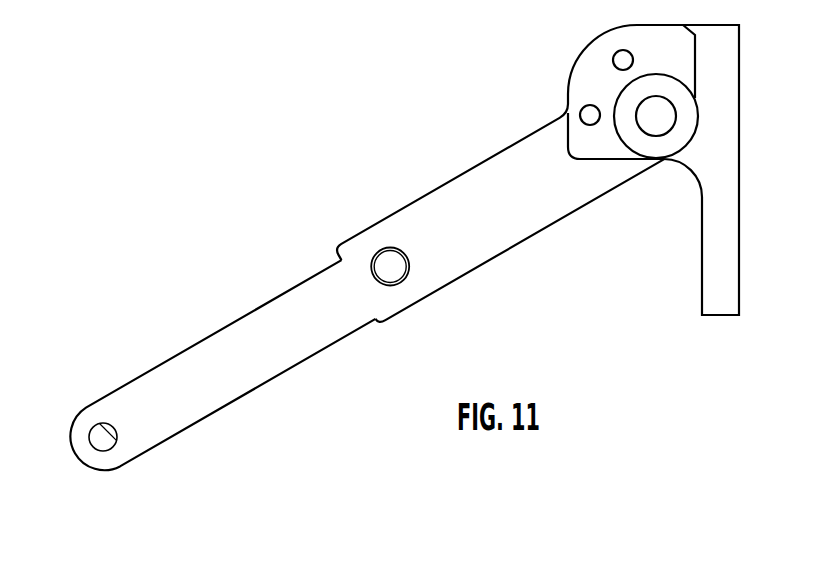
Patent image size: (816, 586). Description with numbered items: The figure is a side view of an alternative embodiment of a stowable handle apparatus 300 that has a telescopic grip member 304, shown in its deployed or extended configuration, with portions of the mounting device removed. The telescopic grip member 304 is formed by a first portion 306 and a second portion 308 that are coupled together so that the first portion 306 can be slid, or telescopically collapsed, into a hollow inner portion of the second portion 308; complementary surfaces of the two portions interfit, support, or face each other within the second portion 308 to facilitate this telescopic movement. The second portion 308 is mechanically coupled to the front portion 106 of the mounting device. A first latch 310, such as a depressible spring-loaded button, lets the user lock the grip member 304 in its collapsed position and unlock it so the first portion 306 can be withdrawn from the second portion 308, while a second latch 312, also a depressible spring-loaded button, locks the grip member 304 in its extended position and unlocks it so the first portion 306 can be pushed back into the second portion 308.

The front portion 106 is at (712, 219).
The handle apparatus 300 is at (310, 94).
The telescopic grip member 304 is at (320, 208).
The first portion 306 is at (215, 333).
The second portion 308 is at (468, 171).
The first latch 310 is at (91, 390).
The second latch 312 is at (392, 268).